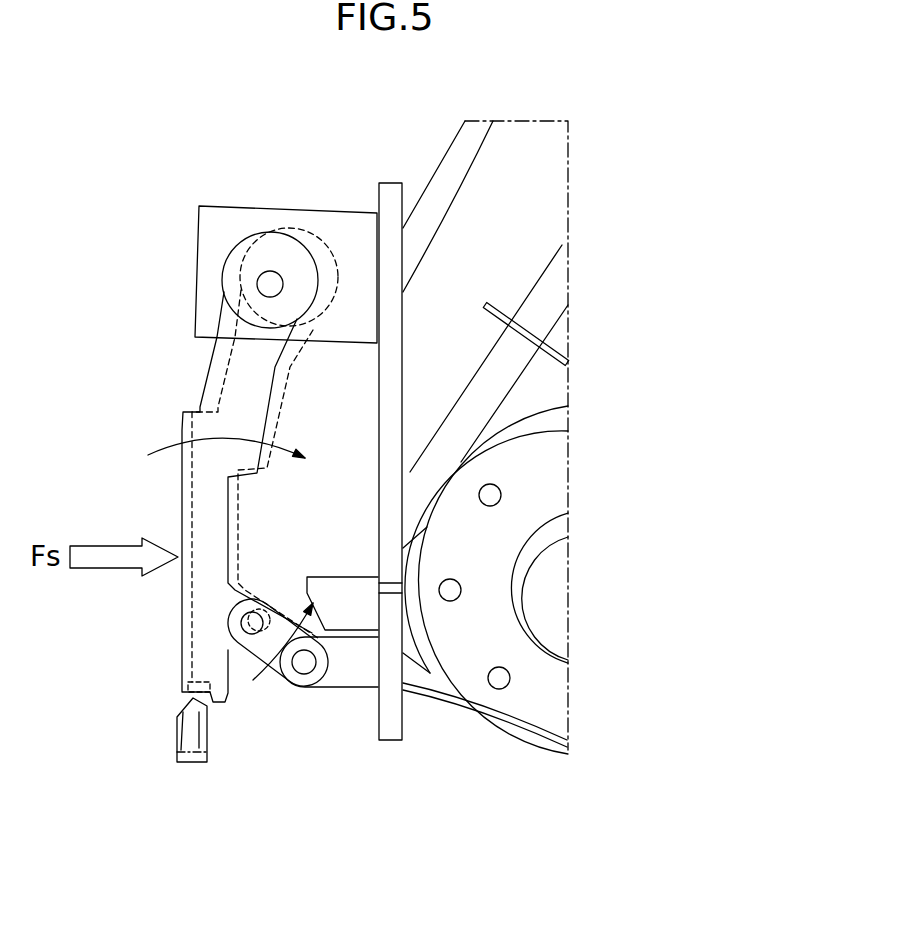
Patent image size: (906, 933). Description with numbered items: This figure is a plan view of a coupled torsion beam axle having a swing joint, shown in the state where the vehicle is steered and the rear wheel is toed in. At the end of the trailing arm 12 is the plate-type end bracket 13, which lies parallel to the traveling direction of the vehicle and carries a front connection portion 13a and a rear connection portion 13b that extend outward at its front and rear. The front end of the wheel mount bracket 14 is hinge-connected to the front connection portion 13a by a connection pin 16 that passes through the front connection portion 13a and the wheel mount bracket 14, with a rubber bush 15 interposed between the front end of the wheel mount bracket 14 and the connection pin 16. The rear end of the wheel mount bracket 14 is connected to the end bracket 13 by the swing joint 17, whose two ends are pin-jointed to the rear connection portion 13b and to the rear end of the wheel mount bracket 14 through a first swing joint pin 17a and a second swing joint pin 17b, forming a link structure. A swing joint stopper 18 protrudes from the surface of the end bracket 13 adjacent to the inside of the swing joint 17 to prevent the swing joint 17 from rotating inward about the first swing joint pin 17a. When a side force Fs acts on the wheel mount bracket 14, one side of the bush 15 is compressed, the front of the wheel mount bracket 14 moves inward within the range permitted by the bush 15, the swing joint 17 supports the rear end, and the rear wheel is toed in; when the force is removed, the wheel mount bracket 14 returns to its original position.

The trailing arm 12 is at (527, 235).
The end bracket 13 is at (387, 410).
The front connection portion 13a is at (342, 223).
The rear connection portion 13b is at (353, 660).
The wheel mount bracket 14 is at (205, 523).
The rubber bush 15 is at (260, 258).
The connection pin 16 is at (270, 284).
The swing joint 17 is at (262, 708).
The first swing joint pin 17a is at (304, 665).
The second swing joint pin 17b is at (242, 627).
The swing joint stopper 18 is at (357, 607).